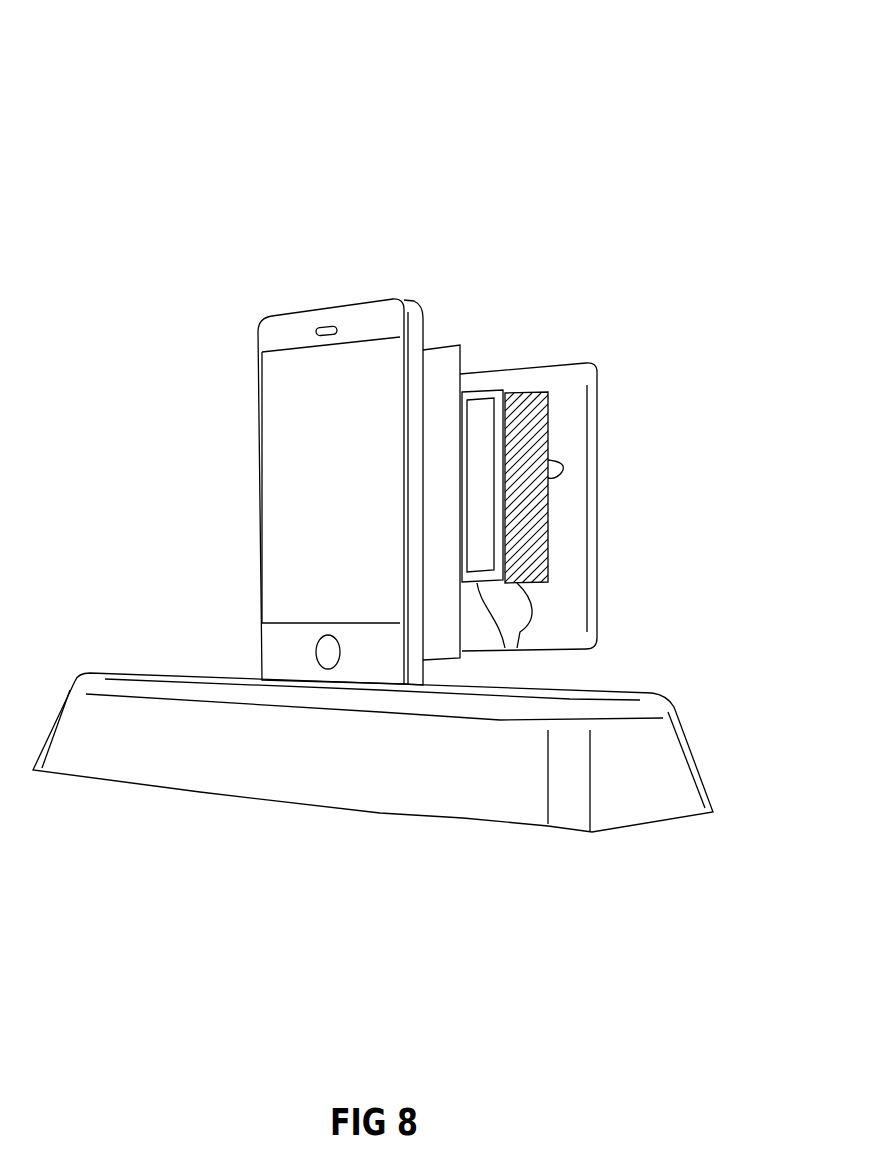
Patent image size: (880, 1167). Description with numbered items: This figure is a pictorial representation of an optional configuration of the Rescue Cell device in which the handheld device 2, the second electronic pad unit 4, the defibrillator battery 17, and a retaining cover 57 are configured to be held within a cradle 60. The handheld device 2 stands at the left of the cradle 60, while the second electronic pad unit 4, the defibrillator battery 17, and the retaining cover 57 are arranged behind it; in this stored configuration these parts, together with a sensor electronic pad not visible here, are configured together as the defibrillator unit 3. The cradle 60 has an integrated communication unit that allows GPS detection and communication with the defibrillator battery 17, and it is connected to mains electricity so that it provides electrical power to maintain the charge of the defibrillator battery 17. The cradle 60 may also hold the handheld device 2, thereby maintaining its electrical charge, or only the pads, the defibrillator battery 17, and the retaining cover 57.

The handheld device 2 is at (262, 325).
The defibrillator unit 3 is at (479, 390).
The second electronic pad unit 4 is at (540, 392).
The defibrillator battery 17 is at (586, 540).
The retaining cover 57 is at (430, 348).
The cradle 60 is at (600, 827).